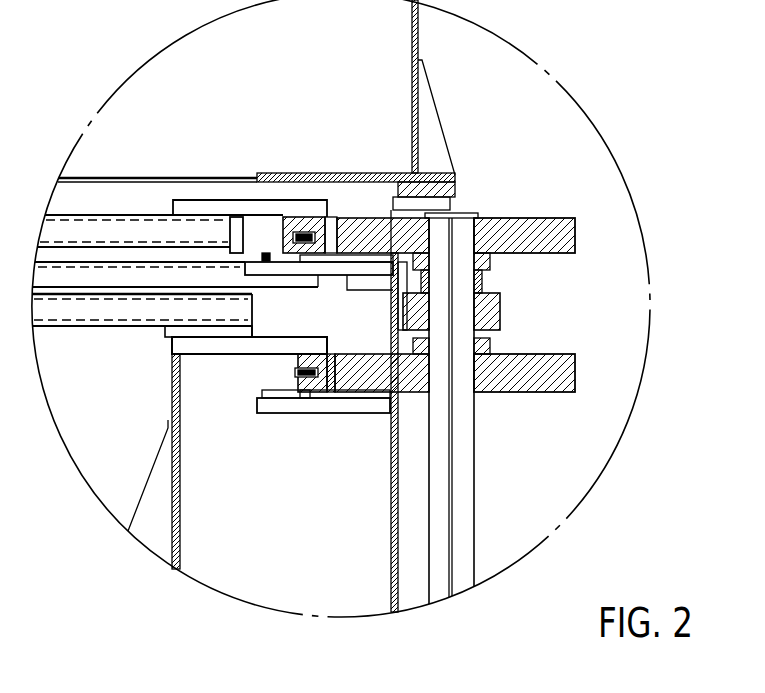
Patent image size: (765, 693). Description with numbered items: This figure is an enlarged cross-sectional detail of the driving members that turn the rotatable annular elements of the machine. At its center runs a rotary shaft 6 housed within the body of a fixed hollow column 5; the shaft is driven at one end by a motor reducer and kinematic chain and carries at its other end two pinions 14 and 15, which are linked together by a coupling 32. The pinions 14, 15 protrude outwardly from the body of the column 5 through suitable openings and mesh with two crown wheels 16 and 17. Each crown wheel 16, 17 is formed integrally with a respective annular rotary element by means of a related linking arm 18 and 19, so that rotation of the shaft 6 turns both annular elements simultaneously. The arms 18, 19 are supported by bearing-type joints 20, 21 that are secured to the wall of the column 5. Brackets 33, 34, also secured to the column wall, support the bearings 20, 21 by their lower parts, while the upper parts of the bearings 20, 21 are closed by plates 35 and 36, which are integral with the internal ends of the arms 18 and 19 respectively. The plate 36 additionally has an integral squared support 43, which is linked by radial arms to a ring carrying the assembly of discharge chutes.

The fixed hollow column 5 is at (390, 537).
The rotary shaft 6 is at (463, 497).
The pinion 14 is at (532, 237).
The pinion 15 is at (517, 382).
The crown wheel 16 is at (330, 220).
The crown wheel 17 is at (327, 395).
The linking arm 18 is at (140, 230).
The linking arm 19 is at (125, 312).
The bearing 20 is at (275, 210).
The bearing 21 is at (293, 370).
The coupling 32 is at (500, 308).
The bracket 33 is at (333, 270).
The bracket 34 is at (351, 405).
The plate 35 is at (220, 207).
The plate 36 is at (274, 345).
The squared support 43 is at (162, 525).